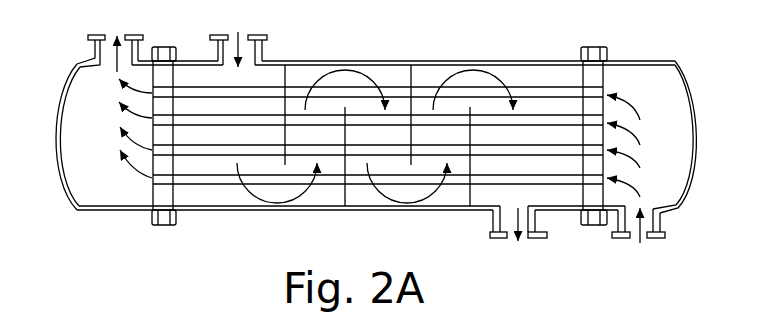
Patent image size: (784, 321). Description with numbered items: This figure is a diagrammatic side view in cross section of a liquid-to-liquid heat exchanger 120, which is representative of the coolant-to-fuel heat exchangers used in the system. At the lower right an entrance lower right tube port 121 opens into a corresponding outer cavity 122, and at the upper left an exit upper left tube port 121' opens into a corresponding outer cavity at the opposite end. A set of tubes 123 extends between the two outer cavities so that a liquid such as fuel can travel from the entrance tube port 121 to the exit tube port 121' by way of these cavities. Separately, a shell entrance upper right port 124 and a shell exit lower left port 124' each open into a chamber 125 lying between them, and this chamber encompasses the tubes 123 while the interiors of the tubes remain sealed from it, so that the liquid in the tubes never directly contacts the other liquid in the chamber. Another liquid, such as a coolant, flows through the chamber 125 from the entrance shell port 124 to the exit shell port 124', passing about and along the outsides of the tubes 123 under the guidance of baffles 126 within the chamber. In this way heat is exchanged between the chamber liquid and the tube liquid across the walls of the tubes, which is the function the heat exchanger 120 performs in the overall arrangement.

The liquid-to-liquid heat exchanger 120 is at (500, 61).
The entrance lower right tube port 121 is at (674, 242).
The exit upper left tube port 121' is at (83, 44).
The outer cavity 122 is at (88, 112).
The set of tubes 123 is at (424, 172).
The shell entrance upper right port 124 is at (271, 41).
The shell exit lower left port 124' is at (483, 223).
The chamber 125 is at (343, 143).
The baffles 126 is at (407, 84).